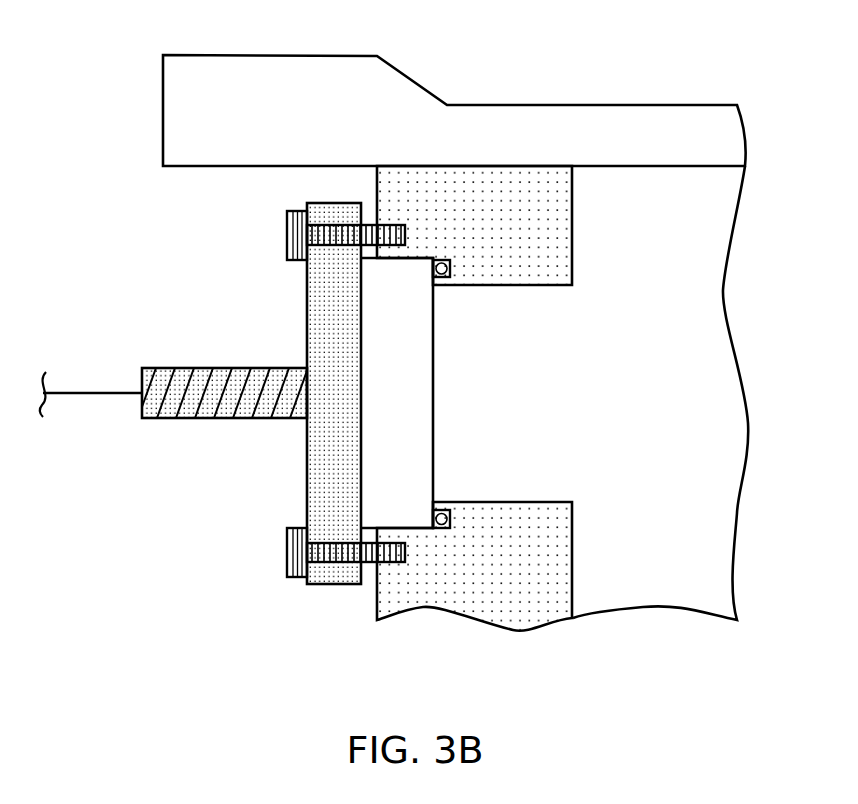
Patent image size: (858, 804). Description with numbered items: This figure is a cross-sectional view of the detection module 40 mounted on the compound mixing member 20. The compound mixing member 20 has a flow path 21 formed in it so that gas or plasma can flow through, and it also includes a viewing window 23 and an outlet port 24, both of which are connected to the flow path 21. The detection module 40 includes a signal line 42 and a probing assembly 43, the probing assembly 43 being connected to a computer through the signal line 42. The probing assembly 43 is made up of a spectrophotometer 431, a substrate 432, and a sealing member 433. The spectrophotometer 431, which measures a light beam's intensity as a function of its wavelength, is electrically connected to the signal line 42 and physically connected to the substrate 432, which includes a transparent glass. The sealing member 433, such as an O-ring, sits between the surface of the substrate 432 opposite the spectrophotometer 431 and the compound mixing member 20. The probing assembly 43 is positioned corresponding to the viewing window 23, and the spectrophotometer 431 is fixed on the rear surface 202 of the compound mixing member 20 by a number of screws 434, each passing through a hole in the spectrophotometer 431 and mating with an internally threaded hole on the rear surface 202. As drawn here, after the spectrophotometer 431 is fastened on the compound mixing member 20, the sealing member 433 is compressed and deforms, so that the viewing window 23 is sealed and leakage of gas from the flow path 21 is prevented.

The compound mixing member 20 is at (645, 75).
The flow path 21 is at (697, 520).
The rear surface 202 is at (377, 187).
The viewing window 23 is at (534, 372).
The outlet port 24 is at (395, 563).
The detection module 40 is at (130, 298).
The signal line 42 is at (93, 393).
The probing assembly 43 is at (268, 603).
The spectrophotometer 431 is at (320, 318).
The substrate 432 is at (385, 473).
The sealing member 433 is at (440, 524).
The screws 434 is at (287, 235).